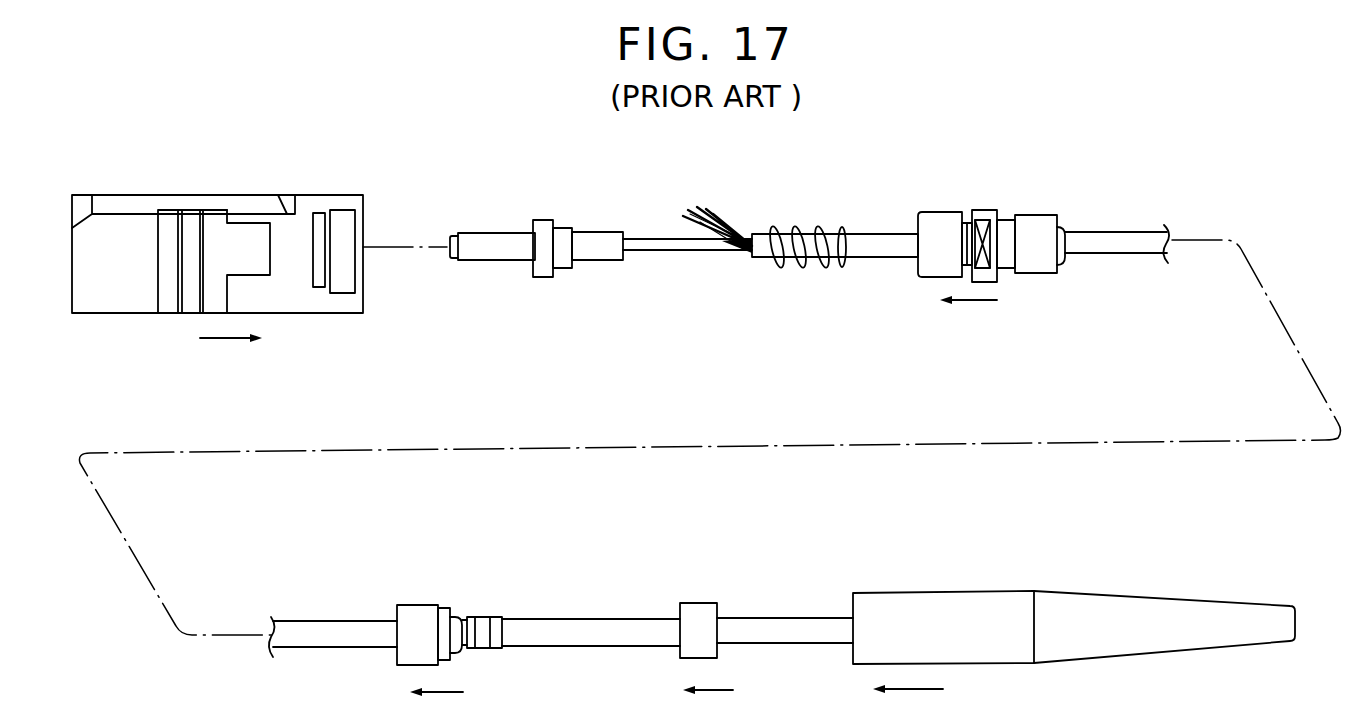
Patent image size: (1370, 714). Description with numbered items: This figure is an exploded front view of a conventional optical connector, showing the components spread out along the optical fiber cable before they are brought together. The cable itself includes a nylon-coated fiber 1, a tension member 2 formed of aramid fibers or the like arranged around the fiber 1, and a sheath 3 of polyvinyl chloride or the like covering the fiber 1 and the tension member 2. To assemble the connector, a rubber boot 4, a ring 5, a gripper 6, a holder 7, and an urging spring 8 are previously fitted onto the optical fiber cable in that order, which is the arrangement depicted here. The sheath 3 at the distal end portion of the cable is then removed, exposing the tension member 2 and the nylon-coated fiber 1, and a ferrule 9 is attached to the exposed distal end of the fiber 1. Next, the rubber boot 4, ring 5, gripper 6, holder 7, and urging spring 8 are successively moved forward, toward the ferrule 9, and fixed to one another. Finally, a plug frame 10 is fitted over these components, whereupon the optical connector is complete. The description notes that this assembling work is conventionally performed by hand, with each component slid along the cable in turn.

The nylon-coated fiber 1 is at (663, 247).
The tension member 2 is at (715, 215).
The sheath 3 is at (872, 250).
The rubber boot 4 is at (937, 608).
The ring 5 is at (697, 610).
The gripper 6 is at (420, 613).
The holder 7 is at (937, 227).
The urging spring 8 is at (803, 268).
The ferrule 9 is at (500, 252).
The plug frame 10 is at (222, 200).